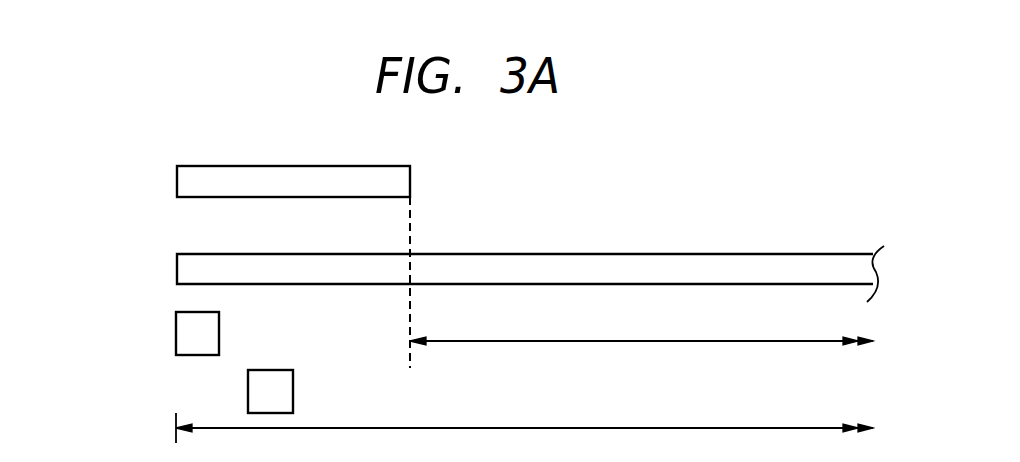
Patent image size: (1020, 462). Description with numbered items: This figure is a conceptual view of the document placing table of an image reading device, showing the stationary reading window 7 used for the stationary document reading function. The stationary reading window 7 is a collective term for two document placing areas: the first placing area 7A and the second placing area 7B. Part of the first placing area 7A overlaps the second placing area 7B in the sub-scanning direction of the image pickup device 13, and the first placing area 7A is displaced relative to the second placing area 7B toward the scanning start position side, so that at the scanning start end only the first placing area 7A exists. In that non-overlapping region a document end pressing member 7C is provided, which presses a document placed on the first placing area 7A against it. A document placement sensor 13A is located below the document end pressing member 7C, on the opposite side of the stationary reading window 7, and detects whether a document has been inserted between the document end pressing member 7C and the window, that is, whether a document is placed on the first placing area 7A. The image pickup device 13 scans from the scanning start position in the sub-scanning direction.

The stationary reading window 7 is at (762, 250).
The first placing area 7A is at (524, 421).
The second placing area 7B is at (641, 328).
The document end pressing member 7C is at (411, 181).
The image pickup device 13 is at (156, 413).
The document placement sensor 13A is at (293, 388).